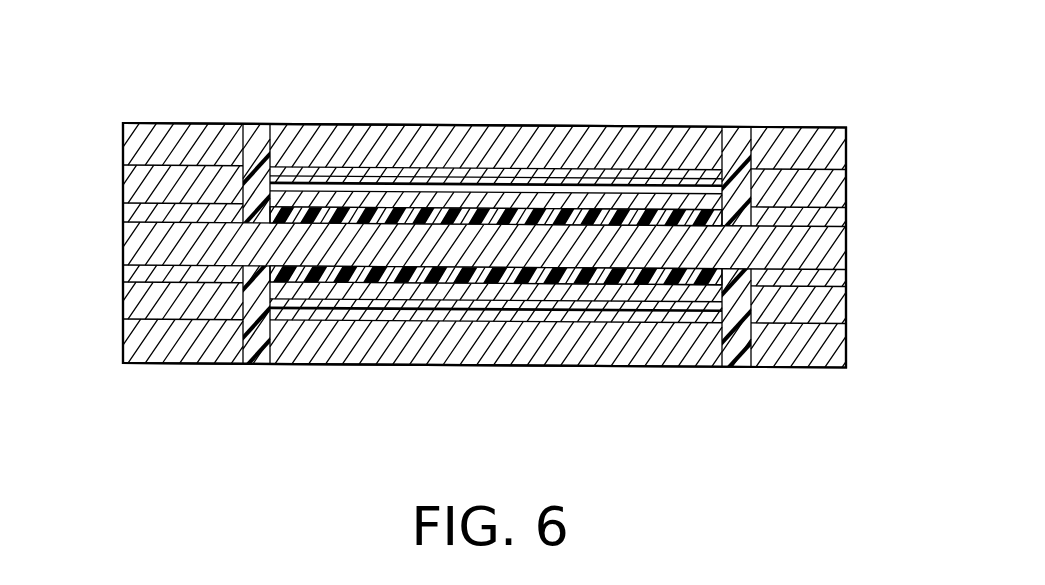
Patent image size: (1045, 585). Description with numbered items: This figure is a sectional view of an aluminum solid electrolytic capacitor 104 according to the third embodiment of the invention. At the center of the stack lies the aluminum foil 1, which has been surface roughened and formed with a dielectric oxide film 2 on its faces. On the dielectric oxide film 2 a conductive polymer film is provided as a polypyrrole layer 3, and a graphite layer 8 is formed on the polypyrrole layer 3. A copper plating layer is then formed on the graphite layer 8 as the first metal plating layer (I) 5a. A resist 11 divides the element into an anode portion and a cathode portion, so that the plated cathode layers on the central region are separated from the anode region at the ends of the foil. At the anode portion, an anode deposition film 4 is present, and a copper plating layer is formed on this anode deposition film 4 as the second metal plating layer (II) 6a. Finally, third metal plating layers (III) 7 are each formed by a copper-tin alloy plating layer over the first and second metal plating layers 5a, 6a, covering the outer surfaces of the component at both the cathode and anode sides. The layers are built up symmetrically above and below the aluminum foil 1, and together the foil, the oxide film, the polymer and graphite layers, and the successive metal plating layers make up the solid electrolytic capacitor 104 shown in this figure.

The solid electrolytic capacitor 104 is at (492, 98).
The third metal plating layer (III) 7 is at (146, 141).
The second metal plating layer (II) 6a is at (196, 168).
The first metal plating layer (I) 5a is at (329, 168).
The aluminum foil 1 is at (123, 242).
The anode deposition film 4 is at (846, 272).
The resist 11 is at (253, 350).
The dielectric oxide film 2 is at (315, 272).
The polypyrrole layer 3 is at (400, 316).
The graphite layer 8 is at (565, 308).